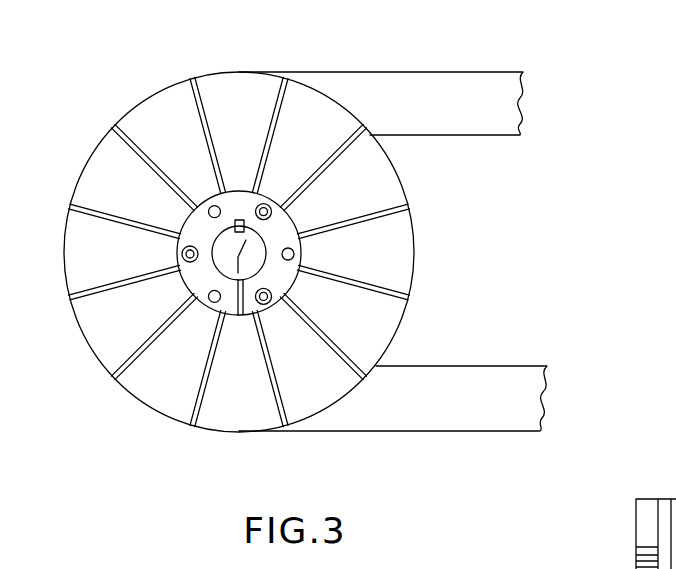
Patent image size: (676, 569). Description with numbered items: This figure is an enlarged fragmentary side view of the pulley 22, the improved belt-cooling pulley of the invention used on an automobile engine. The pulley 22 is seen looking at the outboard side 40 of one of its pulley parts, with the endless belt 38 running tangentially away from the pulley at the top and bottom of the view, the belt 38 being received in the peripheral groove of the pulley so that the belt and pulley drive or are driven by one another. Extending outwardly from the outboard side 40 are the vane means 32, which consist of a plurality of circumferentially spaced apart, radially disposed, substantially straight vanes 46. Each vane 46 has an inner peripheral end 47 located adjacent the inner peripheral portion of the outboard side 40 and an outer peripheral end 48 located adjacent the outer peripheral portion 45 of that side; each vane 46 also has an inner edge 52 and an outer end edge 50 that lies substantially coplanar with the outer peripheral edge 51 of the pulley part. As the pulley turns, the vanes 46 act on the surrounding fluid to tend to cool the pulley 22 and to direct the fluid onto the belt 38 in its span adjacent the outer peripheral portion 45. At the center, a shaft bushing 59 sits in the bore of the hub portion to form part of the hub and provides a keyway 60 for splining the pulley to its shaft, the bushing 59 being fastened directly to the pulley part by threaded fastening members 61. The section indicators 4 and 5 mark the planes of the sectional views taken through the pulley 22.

The section line 4- 4 is at (380, 45).
The section line 5- 5 is at (486, 88).
The pulley 22 is at (323, 320).
The vane means 32 is at (162, 383).
The endless belt 38 is at (530, 380).
The outboard side 40 is at (387, 250).
The outer peripheral portion 45 is at (657, 499).
The vane 46 is at (107, 228).
The inner peripheral end 47 is at (173, 230).
The outer peripheral end 48 is at (77, 200).
The outer end edge 50 is at (72, 210).
The outer peripheral edge 51 is at (83, 343).
The inner edge 52 is at (182, 252).
The shaft bushing 59 is at (182, 290).
The keyway 60 is at (243, 218).
The threaded fastening member 61 is at (270, 203).